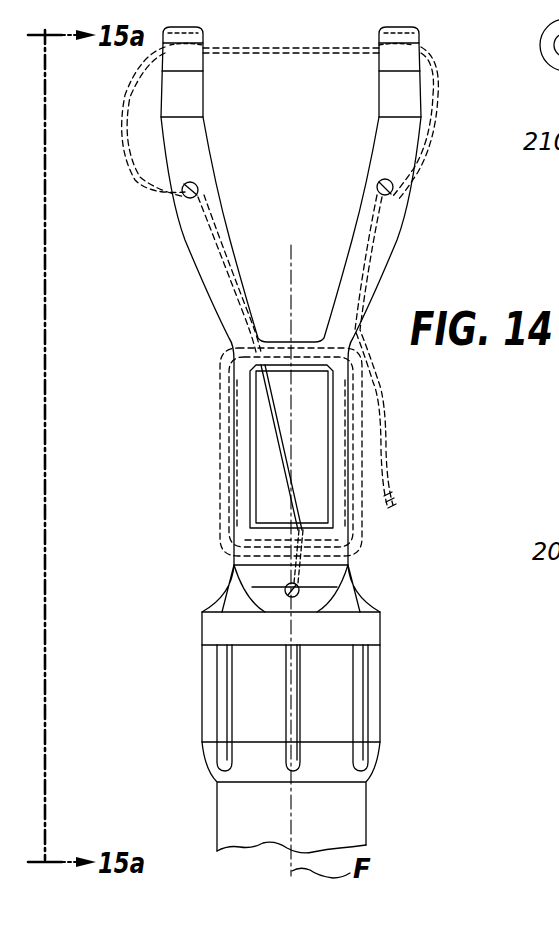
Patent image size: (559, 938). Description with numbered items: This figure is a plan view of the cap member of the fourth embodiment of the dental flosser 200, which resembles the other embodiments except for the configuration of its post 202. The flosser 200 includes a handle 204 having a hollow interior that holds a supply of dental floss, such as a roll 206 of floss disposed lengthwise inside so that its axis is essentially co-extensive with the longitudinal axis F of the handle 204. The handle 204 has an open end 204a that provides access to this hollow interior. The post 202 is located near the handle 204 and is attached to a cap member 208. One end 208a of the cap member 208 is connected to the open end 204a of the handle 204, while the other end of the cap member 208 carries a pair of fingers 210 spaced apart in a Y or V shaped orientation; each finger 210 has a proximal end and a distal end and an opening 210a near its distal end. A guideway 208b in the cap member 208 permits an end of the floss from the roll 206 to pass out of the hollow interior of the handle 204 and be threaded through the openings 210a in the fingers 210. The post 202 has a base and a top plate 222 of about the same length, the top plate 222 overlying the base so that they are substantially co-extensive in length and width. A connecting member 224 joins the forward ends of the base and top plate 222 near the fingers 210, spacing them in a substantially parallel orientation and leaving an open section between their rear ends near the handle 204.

The flosser 200 is at (190, 398).
The post 202 is at (332, 498).
The handle 204 is at (338, 810).
The open end 204a is at (333, 643).
The roll of floss 206 is at (200, 189).
The cap member 208 is at (364, 151).
The end of cap member 208a is at (212, 632).
The guideway 208b is at (285, 587).
The fingers 210 is at (194, 163).
The opening 210a is at (213, 50).
The top plate 222 is at (308, 438).
The connecting member 224 is at (300, 367).